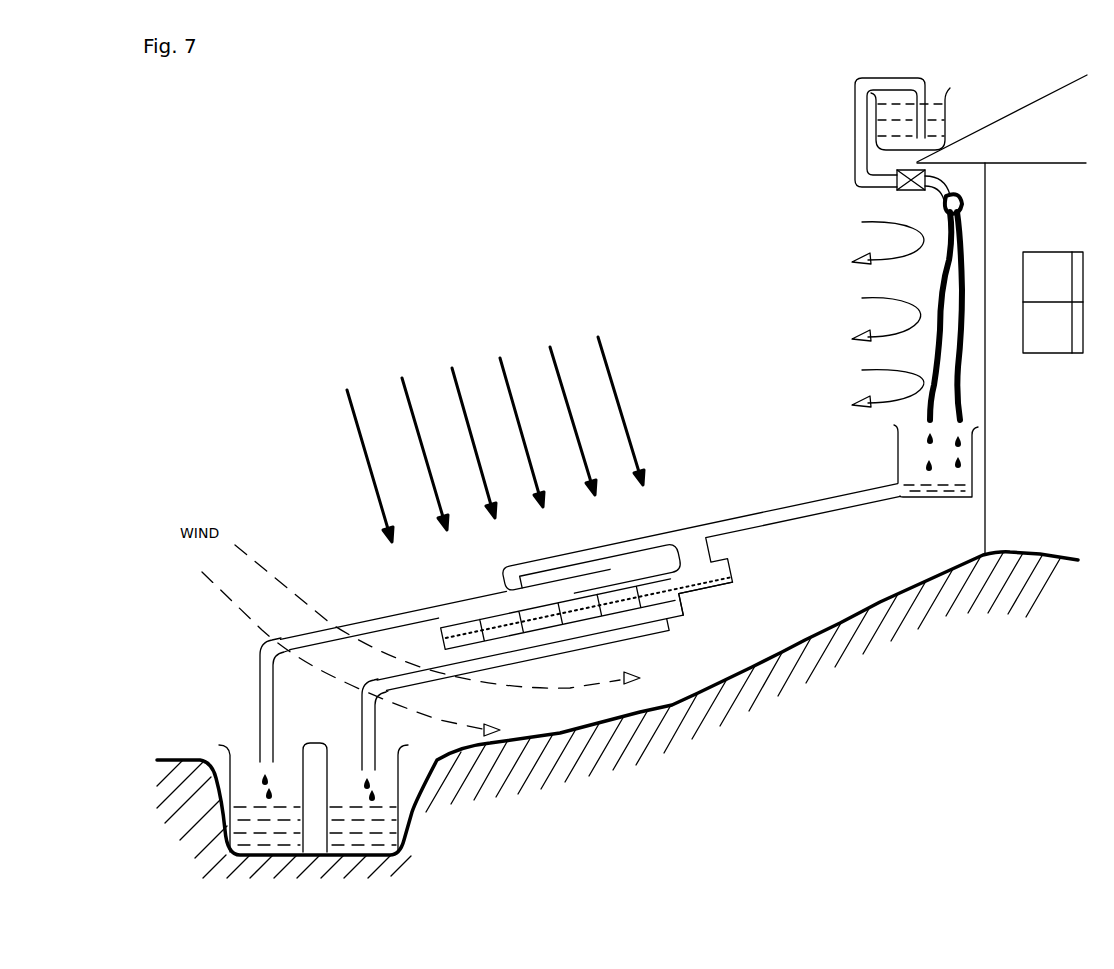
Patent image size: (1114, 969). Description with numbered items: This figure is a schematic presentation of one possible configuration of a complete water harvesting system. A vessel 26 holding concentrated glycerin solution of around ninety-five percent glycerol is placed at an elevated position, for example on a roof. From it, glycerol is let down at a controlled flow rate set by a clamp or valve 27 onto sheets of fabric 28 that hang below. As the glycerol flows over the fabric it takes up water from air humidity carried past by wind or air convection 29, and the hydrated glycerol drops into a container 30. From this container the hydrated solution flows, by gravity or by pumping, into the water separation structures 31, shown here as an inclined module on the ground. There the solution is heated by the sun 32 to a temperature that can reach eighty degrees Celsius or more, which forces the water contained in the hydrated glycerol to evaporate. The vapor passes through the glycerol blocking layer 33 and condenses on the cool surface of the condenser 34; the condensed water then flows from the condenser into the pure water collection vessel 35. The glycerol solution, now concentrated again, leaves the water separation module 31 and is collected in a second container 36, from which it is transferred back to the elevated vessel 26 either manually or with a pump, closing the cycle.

The vessel with concentrated glycerin solution 26 is at (933, 123).
The valve 27 is at (895, 187).
The sheets of fabric 28 is at (948, 260).
The wind or air convection 29 is at (866, 314).
The container 30 is at (913, 453).
The water separation structures 31 is at (710, 553).
The sun 32 is at (495, 428).
The glycerol blocking layer 33 is at (675, 587).
The condenser 34 is at (693, 593).
The pure water collection vessel 35 is at (390, 827).
The container 36 is at (260, 778).